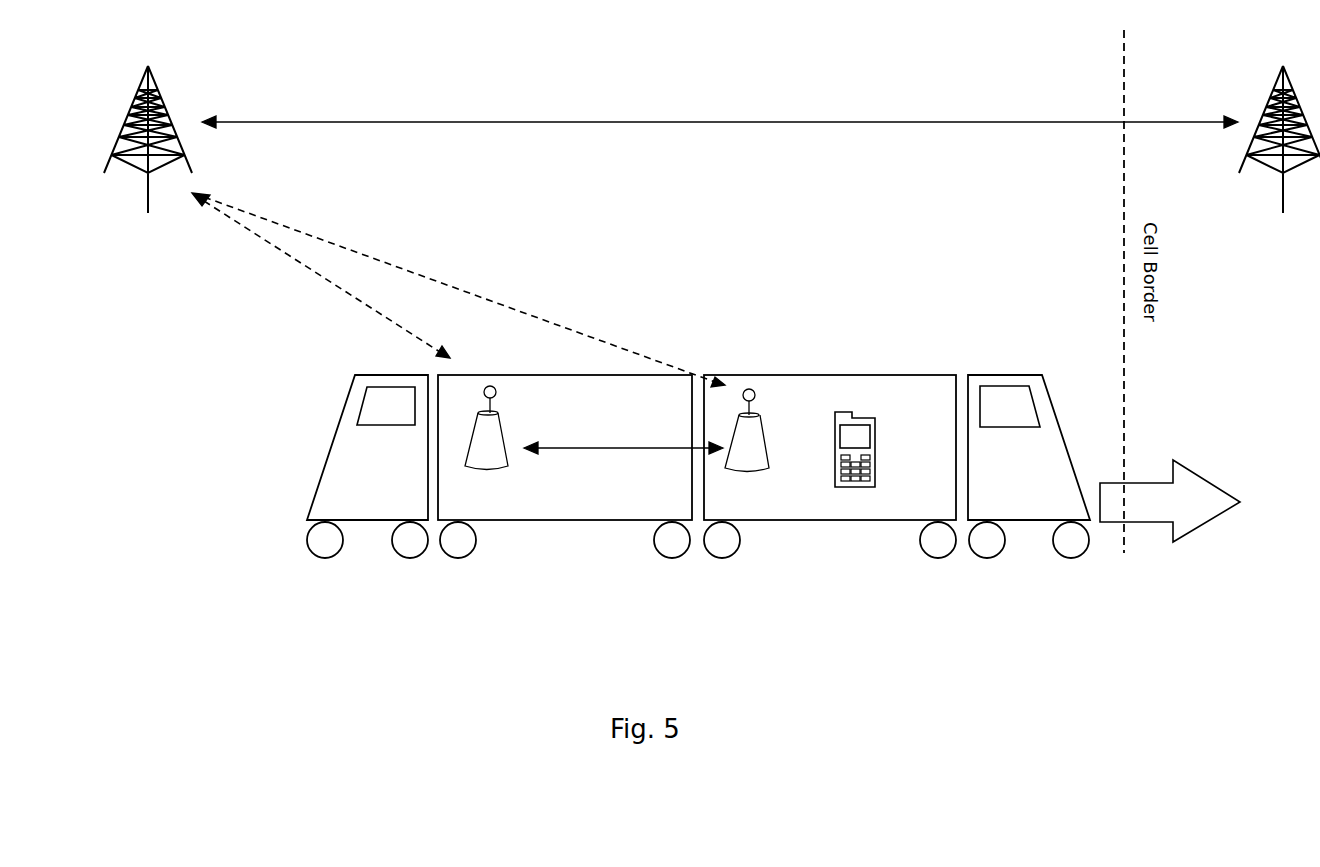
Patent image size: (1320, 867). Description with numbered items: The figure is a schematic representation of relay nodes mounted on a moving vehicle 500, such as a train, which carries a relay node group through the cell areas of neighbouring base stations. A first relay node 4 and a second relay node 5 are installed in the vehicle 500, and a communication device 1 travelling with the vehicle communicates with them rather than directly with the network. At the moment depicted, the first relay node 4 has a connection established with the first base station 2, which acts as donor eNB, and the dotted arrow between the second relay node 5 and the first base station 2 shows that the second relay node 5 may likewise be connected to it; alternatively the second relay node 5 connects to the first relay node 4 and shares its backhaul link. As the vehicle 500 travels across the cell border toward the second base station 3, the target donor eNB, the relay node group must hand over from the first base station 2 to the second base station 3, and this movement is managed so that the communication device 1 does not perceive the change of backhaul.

The communication device 1 is at (857, 420).
The first base station 2 is at (148, 170).
The second base station 3 is at (1279, 159).
The first relay node 4 is at (752, 389).
The second relay node 5 is at (487, 386).
The moving vehicle 500 is at (593, 554).